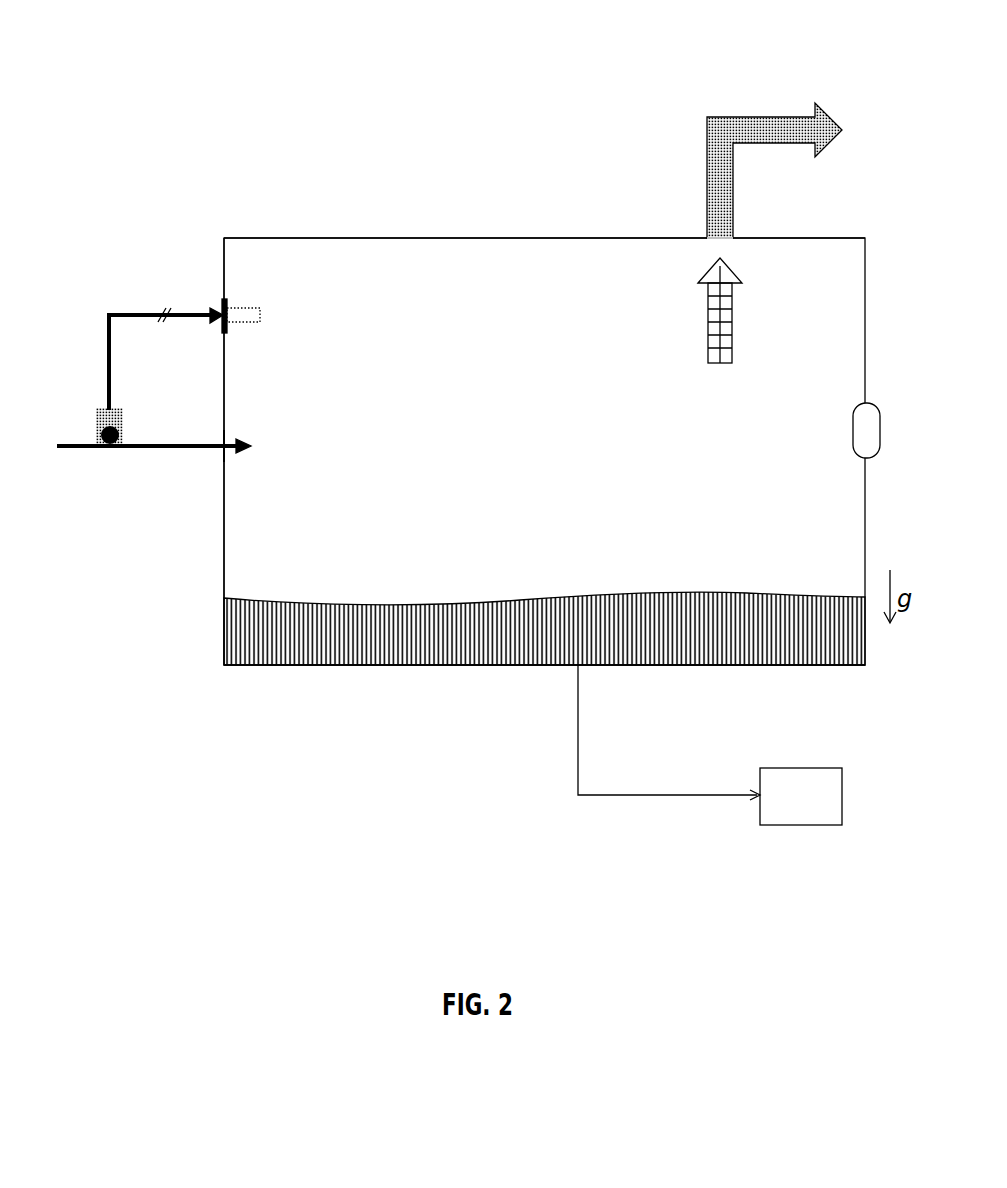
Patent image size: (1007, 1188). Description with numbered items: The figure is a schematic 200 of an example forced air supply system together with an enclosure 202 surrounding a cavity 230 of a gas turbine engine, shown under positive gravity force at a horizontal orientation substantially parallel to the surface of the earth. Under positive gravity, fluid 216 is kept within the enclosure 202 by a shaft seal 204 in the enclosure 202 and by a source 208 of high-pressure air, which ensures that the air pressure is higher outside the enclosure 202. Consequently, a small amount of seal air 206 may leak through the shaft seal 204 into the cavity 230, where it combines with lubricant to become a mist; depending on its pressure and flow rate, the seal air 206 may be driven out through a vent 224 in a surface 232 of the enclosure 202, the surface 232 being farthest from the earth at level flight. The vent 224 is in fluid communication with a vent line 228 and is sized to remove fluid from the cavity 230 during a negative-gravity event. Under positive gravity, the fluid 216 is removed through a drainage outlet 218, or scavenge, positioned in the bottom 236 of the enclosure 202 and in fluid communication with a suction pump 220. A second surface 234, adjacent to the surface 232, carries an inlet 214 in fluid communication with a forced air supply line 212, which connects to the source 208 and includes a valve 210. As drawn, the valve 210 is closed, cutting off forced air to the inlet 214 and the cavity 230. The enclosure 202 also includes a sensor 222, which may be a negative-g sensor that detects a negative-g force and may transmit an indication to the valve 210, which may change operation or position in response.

The schematic 200 is at (272, 92).
The enclosure 202 is at (833, 238).
The shaft seal 204 is at (225, 440).
The seal air 206 is at (735, 340).
The source of high-pressure air 208 is at (67, 447).
The valve 210 is at (100, 442).
The forced air supply line 212 is at (133, 314).
The inlet 214 is at (262, 315).
The fluid 216 is at (717, 637).
The drainage outlet 218 is at (578, 745).
The suction pump 220 is at (801, 796).
The sensor 222 is at (884, 408).
The vent 224 is at (716, 236).
The vent line 228 is at (765, 117).
The cavity 230 is at (544, 418).
The surface 232 is at (380, 237).
The second surface 234 is at (223, 272).
The bottom 236 is at (266, 665).